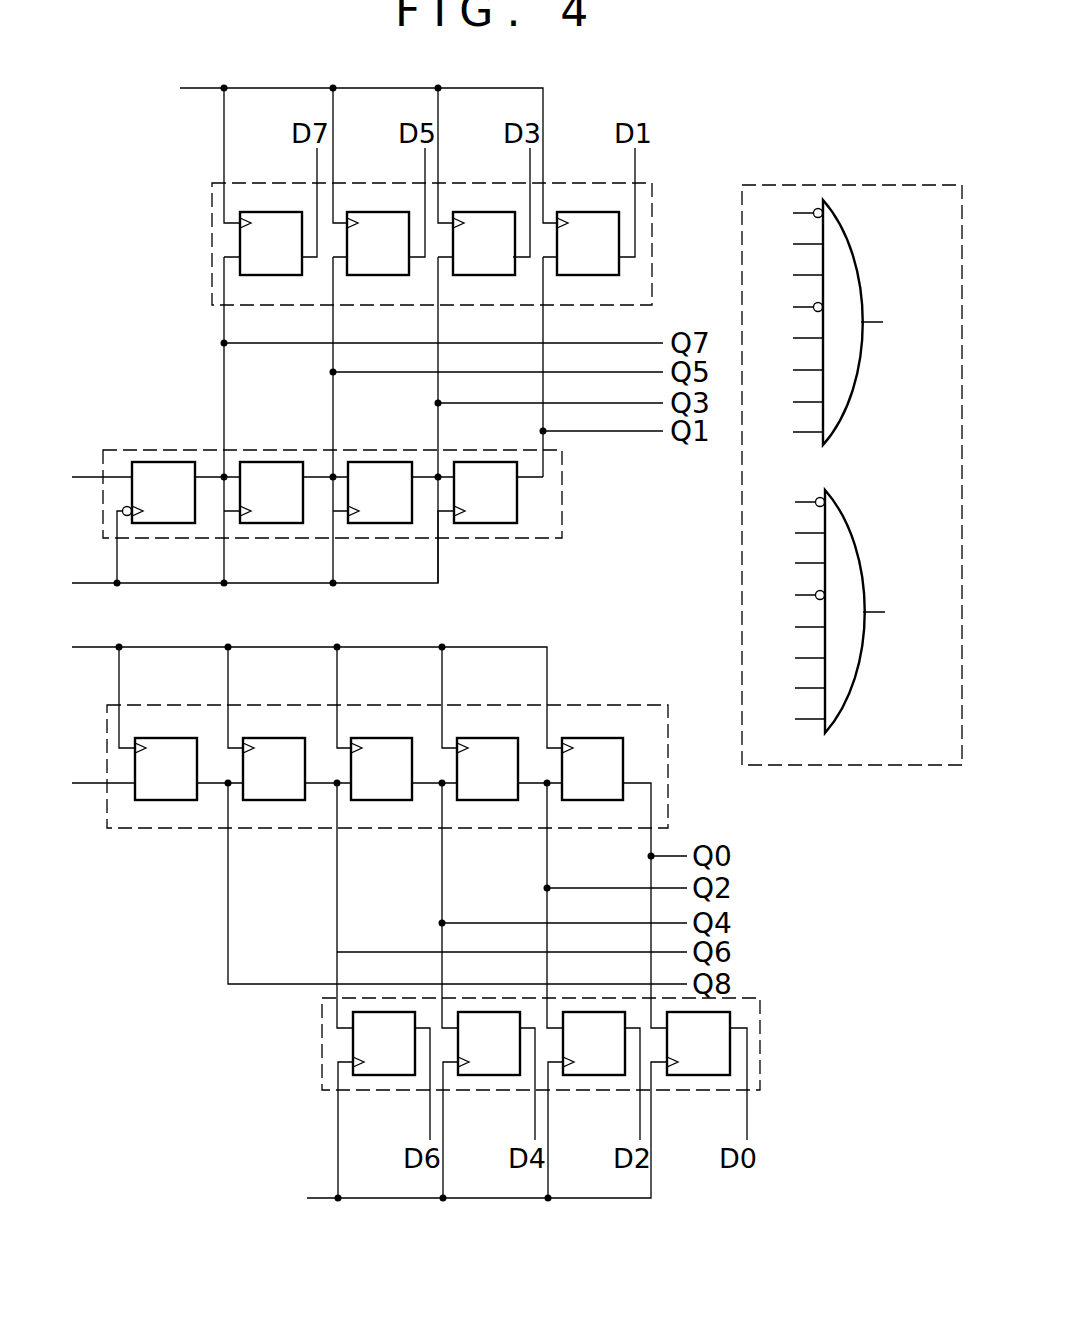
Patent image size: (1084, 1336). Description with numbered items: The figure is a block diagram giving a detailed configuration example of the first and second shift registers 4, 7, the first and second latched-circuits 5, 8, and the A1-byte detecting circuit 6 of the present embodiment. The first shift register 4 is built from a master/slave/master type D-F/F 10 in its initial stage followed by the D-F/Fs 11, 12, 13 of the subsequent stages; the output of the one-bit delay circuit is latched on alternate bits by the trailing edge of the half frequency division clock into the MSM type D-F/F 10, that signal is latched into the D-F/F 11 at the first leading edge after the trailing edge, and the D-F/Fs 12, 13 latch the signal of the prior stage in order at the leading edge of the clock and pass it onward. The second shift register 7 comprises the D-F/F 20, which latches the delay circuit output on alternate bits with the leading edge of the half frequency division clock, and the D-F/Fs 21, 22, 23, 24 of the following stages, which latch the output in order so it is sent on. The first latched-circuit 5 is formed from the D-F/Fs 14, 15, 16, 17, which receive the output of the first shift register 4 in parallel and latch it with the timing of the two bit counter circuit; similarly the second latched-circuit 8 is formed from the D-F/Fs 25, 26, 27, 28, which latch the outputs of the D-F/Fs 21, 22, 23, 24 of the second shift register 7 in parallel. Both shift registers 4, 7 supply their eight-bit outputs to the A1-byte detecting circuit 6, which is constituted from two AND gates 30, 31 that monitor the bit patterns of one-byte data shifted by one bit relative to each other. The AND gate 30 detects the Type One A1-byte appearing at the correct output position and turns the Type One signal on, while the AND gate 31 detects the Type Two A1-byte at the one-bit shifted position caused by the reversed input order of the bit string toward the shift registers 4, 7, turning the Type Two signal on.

The first shift register 4 is at (562, 487).
The first latched-circuit 5 is at (652, 237).
The A1-byte detecting circuit 6 is at (850, 185).
The second shift register 7 is at (668, 763).
The second latched-circuit 8 is at (760, 1047).
The MSM type D-F/F 10 is at (165, 523).
The D-F/F 11 is at (272, 523).
The D-F/F 12 is at (380, 523).
The D-F/F 13 is at (487, 523).
The D-F/F 14 is at (275, 212).
The D-F/F 15 is at (380, 212).
The D-F/F 16 is at (484, 212).
The D-F/F 17 is at (585, 212).
The D-F/F 20 is at (166, 738).
The D-F/F 21 is at (274, 738).
The D-F/F 22 is at (382, 738).
The D-F/F 23 is at (482, 738).
The D-F/F 24 is at (585, 738).
The D-F/F 25 is at (387, 1075).
The D-F/F 26 is at (492, 1075).
The D-F/F 27 is at (598, 1075).
The D-F/F 28 is at (702, 1075).
The AND gate 30 is at (857, 698).
The AND gate 31 is at (855, 412).